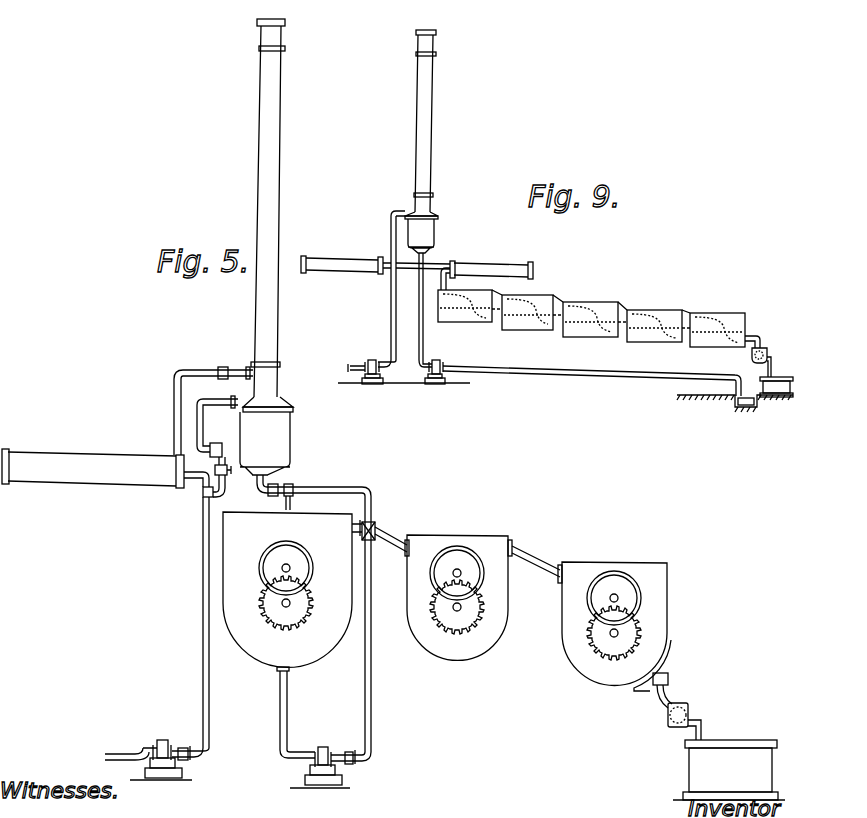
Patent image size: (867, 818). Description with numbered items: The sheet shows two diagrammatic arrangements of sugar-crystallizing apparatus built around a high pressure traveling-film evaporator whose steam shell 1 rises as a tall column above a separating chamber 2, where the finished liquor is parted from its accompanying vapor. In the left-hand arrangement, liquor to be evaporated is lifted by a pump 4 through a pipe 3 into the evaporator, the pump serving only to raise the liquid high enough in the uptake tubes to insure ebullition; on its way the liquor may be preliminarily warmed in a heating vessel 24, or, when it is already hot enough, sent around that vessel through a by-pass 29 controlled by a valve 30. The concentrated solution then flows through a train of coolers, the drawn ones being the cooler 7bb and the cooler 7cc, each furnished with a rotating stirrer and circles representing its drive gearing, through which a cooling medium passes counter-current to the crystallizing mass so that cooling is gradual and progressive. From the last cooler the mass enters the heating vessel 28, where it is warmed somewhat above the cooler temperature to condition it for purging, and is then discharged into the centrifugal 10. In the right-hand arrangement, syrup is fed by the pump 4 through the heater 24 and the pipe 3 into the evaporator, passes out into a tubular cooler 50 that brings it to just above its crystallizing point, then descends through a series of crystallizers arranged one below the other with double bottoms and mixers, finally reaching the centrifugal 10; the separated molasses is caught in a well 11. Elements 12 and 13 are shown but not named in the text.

In FIG. 5, the steam shell 1 is at (262, 174).
In FIG. 9, the steam shell 1 is at (428, 148).
In FIG. 5, the separating chamber 2 is at (305, 453).
In FIG. 9, the separating chamber 2 is at (421, 286).
In FIG. 5, the pipe 3 is at (204, 636).
In FIG. 9, the pipe 3 is at (391, 327).
In FIG. 5, the pump 4 is at (166, 740).
In FIG. 9, the pump 4 is at (372, 360).
In FIG. 5, the cooler 7bb is at (316, 635).
In FIG. 5, the cooler 7cc is at (484, 590).
In FIG. 5, the heating vessel 28 is at (625, 563).
In FIG. 5, the by-pass 29 is at (217, 426).
In FIG. 5, the valve 30 is at (225, 479).
In FIG. 5, the heating vessel 24 is at (127, 427).
In FIG. 9, the heating vessel 24 is at (330, 271).
In FIG. 5, the centrifugal 10 is at (729, 770).
In FIG. 9, the centrifugal 10 is at (776, 387).
In FIG. 9, the tubular cooler 50 is at (483, 266).
In FIG. 9, the receptacle or well 11 is at (740, 410).
In FIG. 9, the pipe 12 is at (574, 378).
In FIG. 9, the pump 13 is at (442, 366).